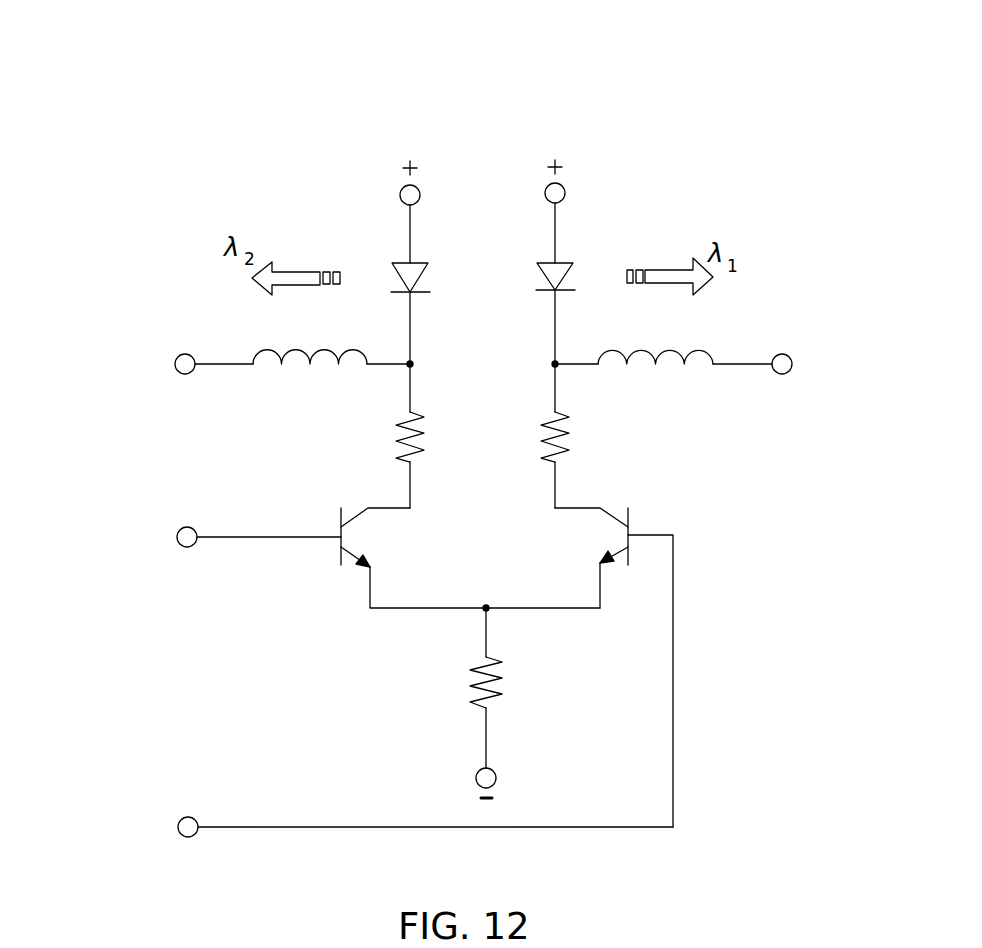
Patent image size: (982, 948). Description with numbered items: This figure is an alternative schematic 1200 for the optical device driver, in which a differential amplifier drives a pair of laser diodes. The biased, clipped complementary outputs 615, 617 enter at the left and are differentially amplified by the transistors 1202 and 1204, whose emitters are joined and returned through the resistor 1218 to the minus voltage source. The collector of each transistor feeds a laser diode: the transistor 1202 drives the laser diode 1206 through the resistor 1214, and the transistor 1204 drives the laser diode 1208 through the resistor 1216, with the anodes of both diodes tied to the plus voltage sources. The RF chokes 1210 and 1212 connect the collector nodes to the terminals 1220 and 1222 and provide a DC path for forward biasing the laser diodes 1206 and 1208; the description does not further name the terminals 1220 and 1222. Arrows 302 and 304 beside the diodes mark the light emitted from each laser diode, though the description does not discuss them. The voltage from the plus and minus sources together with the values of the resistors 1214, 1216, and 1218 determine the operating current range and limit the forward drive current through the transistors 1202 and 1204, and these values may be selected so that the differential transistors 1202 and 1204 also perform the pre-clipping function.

The alternative schematic 1200 is at (508, 106).
The transistor 1202 is at (338, 515).
The transistor 1204 is at (628, 511).
The laser diode 1206 is at (397, 262).
The laser diode 1208 is at (612, 233).
The RF choke 1210 is at (298, 368).
The RF choke 1212 is at (643, 368).
The resistor 1214 is at (400, 448).
The resistor 1216 is at (570, 440).
The resistor 1218 is at (498, 672).
The first modulation input terminal 1220 is at (177, 355).
The second modulation input terminal 1222 is at (790, 355).
The first optical output beam 302 is at (297, 287).
The second optical output beam 304 is at (660, 284).
The complementary output 615 is at (175, 533).
The complementary output 617 is at (178, 825).